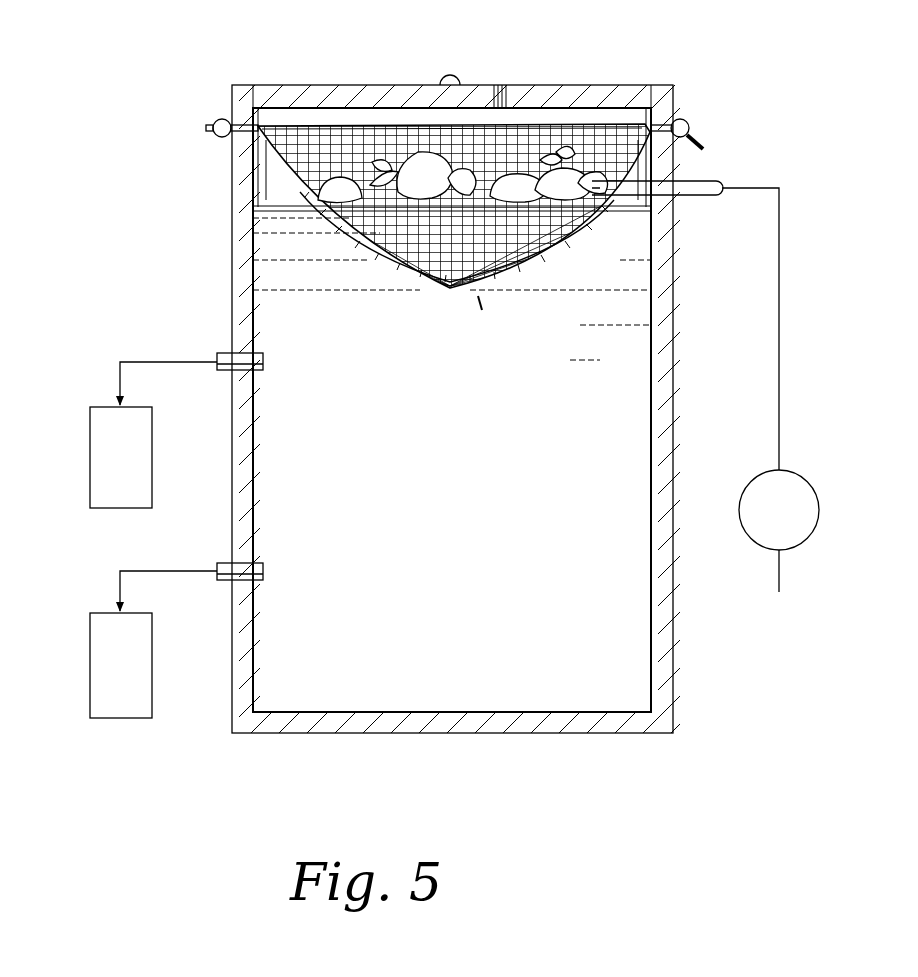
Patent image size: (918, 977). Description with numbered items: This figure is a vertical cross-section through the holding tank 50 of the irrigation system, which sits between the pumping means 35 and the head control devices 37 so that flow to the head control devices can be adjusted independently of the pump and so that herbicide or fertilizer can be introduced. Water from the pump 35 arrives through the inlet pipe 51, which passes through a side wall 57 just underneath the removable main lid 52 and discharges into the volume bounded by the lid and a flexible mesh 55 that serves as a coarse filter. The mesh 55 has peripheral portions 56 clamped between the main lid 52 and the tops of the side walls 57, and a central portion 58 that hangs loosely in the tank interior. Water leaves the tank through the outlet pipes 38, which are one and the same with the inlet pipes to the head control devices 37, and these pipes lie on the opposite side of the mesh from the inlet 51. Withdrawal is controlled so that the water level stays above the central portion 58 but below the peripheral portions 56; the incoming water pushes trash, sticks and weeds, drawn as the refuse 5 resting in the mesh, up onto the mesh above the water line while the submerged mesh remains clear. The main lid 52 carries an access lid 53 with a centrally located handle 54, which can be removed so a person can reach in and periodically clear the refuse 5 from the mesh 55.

The fruit / produce 5 is at (420, 152).
The pumping means 35 is at (853, 462).
The head control device 37 is at (72, 400).
The inlet pipe 38 is at (233, 360).
The holding tank 50 is at (735, 30).
The inlet pipe 51 is at (632, 188).
The main lid 52 is at (585, 100).
The access lid 53 is at (496, 100).
The handle 54 is at (465, 60).
The flexible mesh 55 is at (482, 310).
The peripheral portions 56 is at (256, 120).
The side walls 57 is at (243, 180).
The central portion 58 is at (410, 290).